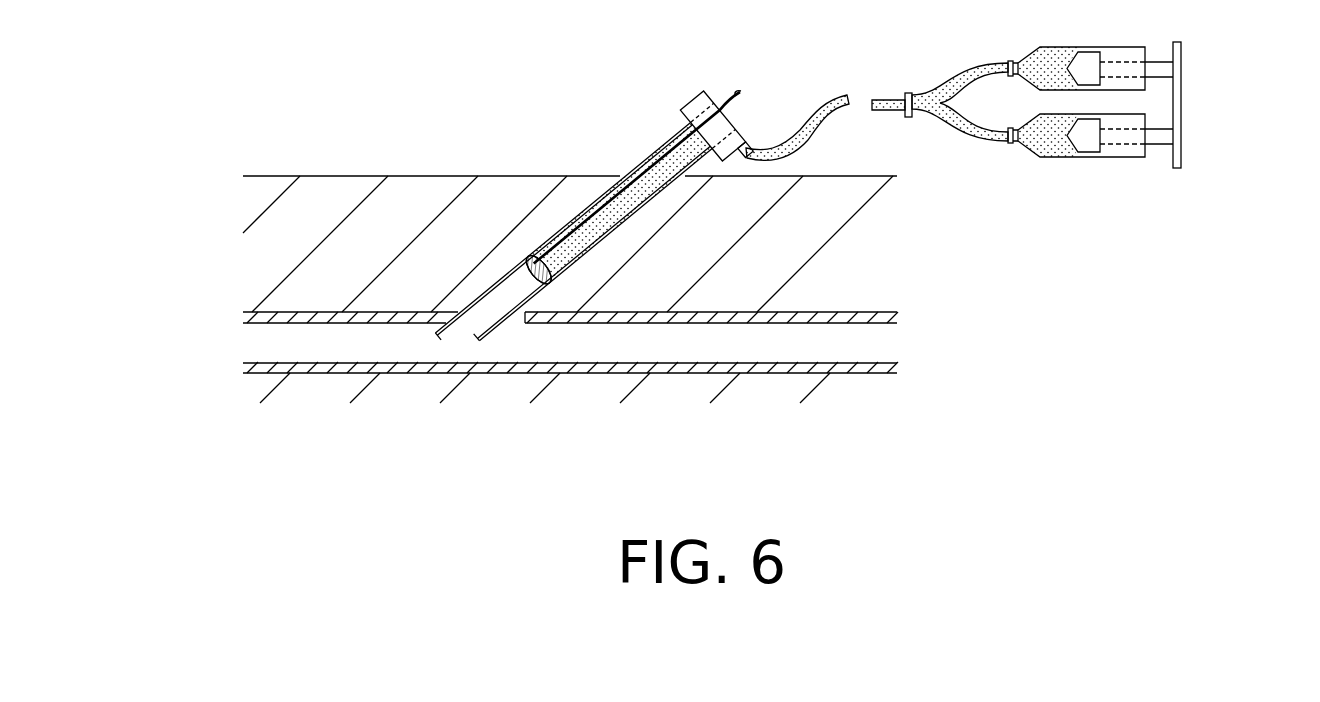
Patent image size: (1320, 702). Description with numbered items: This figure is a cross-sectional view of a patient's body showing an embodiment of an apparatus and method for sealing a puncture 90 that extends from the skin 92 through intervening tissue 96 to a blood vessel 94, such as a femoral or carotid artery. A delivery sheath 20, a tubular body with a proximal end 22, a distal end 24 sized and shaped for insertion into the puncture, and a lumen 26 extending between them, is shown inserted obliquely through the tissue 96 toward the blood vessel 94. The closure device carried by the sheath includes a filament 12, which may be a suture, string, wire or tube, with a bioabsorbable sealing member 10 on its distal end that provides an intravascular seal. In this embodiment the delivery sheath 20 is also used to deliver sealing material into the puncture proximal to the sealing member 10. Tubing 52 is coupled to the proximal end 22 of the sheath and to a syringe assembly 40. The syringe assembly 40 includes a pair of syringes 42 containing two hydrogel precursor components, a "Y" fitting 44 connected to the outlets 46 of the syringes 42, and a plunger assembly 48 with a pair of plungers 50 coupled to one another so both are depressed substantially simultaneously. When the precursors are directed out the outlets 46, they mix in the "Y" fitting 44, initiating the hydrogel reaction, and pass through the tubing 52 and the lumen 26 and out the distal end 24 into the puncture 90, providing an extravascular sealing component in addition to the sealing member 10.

The sealing member 10 is at (472, 321).
The filament 12 is at (735, 100).
The delivery sheath 20 is at (630, 162).
The proximal end 22 is at (672, 138).
The distal end 24 is at (432, 330).
The lumen 26 is at (480, 338).
The syringe assembly 40 is at (1094, 202).
The syringes 42 is at (1052, 114).
The "Y" fitting 44 is at (927, 113).
The outlets 46 is at (1007, 127).
The plunger assembly 48 is at (1182, 102).
The plungers 50 is at (1088, 128).
The tubing 52 is at (833, 102).
The puncture 90 is at (552, 228).
The skin 92 is at (830, 177).
The blood vessel 94 is at (855, 363).
The tissue 96 is at (805, 245).